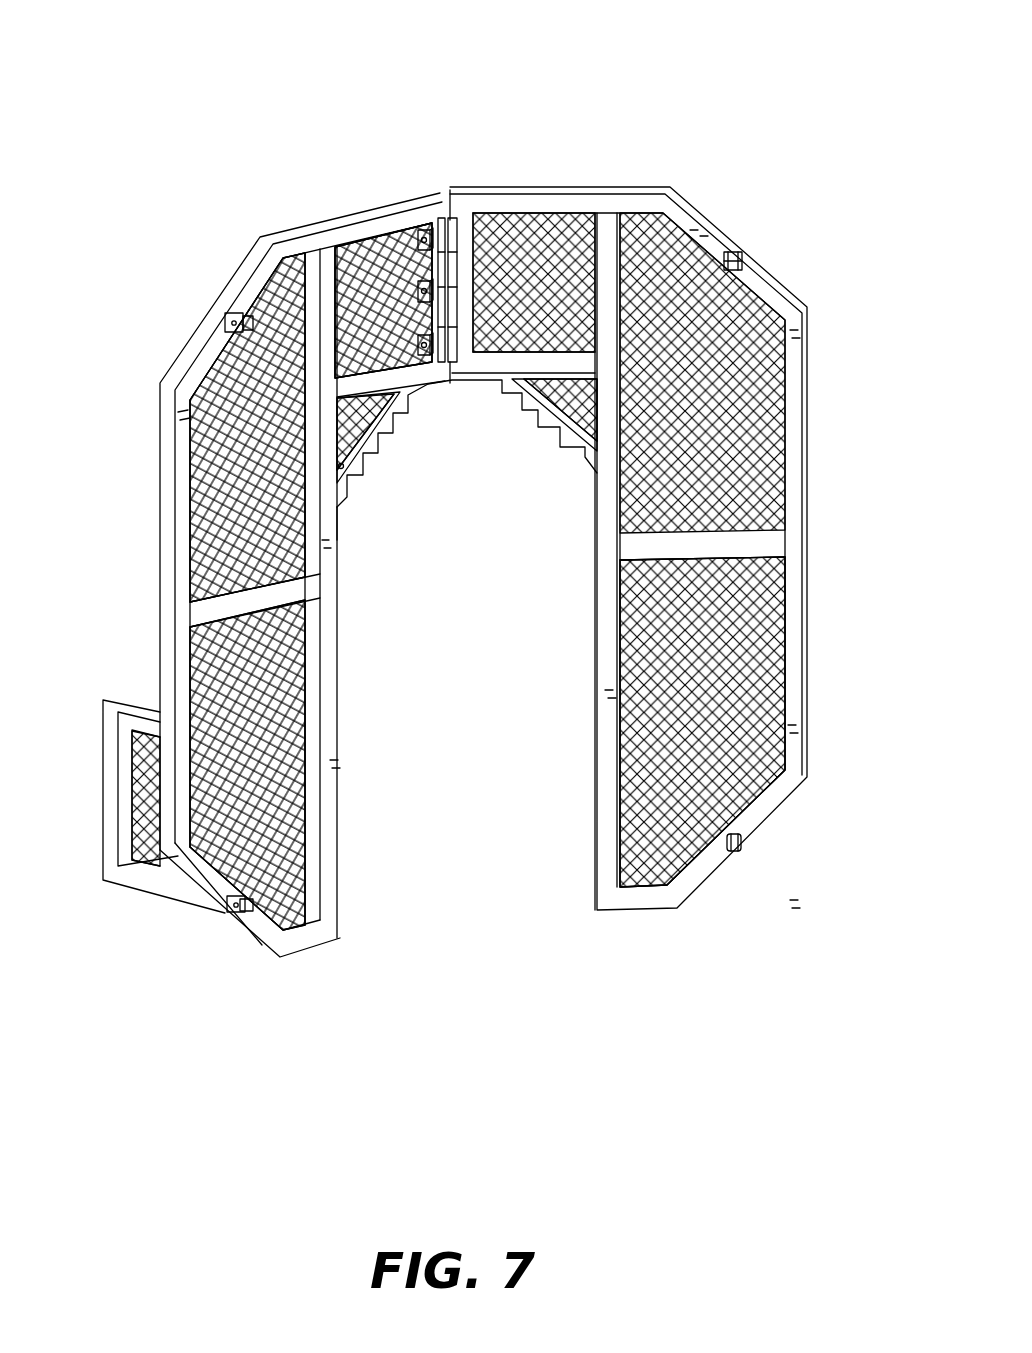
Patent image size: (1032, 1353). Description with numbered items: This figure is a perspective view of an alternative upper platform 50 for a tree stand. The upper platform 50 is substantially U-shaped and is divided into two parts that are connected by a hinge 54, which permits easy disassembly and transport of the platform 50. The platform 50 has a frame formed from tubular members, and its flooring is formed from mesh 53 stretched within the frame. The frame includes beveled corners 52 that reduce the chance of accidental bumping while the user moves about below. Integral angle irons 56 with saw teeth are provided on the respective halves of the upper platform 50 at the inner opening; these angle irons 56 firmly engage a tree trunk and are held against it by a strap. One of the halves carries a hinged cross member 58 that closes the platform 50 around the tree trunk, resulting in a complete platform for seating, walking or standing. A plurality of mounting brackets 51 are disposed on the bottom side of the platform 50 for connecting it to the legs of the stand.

The upper platform 50 is at (793, 96).
The mounting bracket 51 is at (232, 914).
The beveled corner 52 is at (227, 317).
The mesh 53 is at (750, 660).
The hinge 54 is at (450, 220).
The angle iron 56 is at (502, 392).
The hinged cross member 58 is at (102, 704).